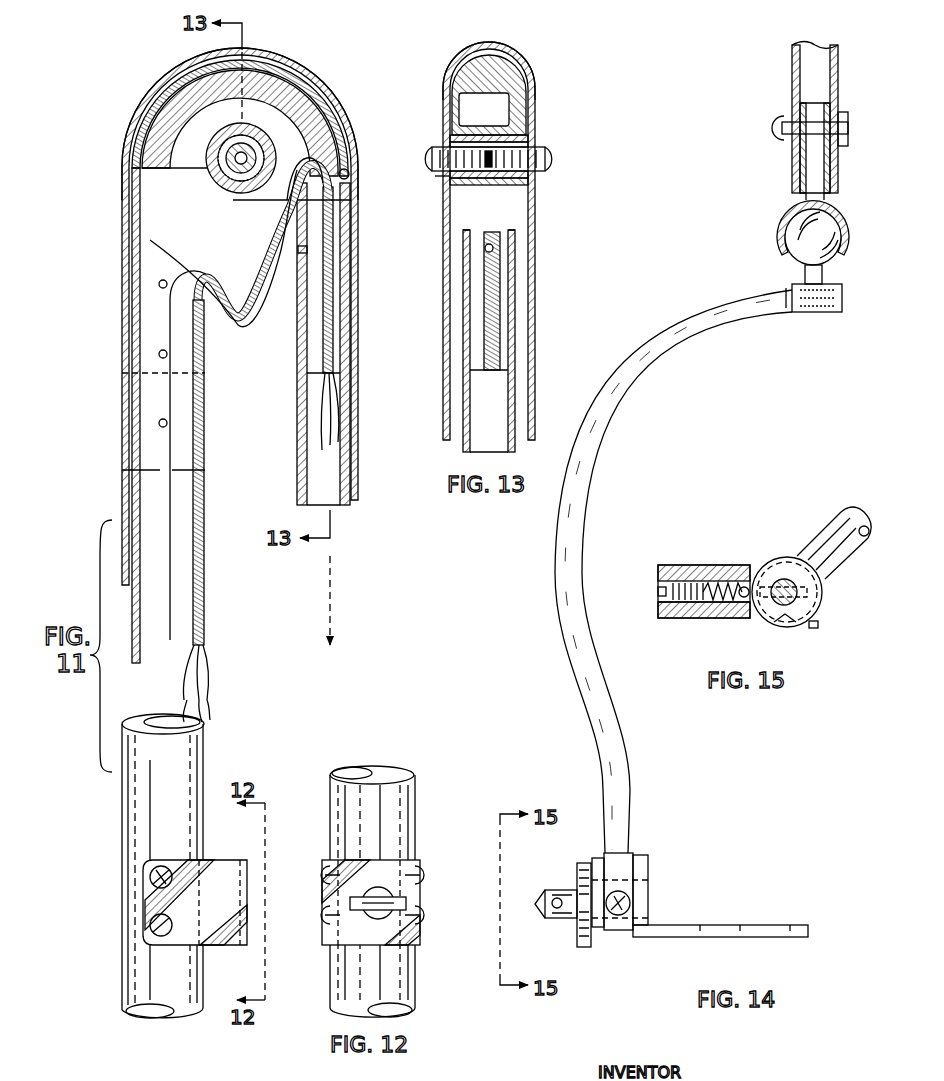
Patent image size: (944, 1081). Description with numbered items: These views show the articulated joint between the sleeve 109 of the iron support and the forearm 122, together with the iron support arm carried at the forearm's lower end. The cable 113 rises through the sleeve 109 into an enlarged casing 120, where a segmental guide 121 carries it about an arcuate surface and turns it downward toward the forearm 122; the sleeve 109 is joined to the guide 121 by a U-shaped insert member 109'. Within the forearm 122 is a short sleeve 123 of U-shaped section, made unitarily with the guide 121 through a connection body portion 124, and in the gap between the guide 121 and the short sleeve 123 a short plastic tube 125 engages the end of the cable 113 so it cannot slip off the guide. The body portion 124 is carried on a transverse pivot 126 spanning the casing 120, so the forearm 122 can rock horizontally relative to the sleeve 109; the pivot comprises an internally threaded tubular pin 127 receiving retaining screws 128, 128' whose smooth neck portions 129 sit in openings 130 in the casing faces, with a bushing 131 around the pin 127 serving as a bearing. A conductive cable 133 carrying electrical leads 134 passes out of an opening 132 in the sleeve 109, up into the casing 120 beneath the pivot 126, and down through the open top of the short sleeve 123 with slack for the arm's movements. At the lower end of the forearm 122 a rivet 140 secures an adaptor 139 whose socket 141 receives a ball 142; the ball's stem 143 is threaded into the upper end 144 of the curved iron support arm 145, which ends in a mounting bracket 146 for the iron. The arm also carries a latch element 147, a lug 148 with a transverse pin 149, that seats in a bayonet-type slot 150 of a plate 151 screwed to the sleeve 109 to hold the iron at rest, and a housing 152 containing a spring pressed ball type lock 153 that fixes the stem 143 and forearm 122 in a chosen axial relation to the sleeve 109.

In FIG. 11, the sleeve 109 is at (155, 616).
In FIG. 12, the sleeve 109 is at (401, 891).
In FIG. 11, the insert member 109' is at (220, 472).
In FIG. 11, the cable 113 is at (162, 90).
In FIG. 13, the cable 113 is at (490, 58).
In FIG. 11, the casing 120 is at (126, 240).
In FIG. 13, the casing 120 is at (531, 74).
In FIG. 11, the segmental guide 121 is at (273, 110).
In FIG. 11, the forearm 122 is at (350, 385).
In FIG. 13, the forearm 122 is at (515, 392).
In FIG. 14, the forearm 122 is at (794, 76).
In FIG. 11, the short sleeve 123 is at (334, 266).
In FIG. 13, the short sleeve 123 is at (500, 302).
In FIG. 11, the body portion 124 is at (300, 80).
In FIG. 13, the body portion 124 is at (520, 104).
In FIG. 11, the plastic tube 125 is at (350, 174).
In FIG. 13, the plastic tube 125 is at (434, 177).
In FIG. 13, the pivot 126 is at (540, 150).
In FIG. 11, the tubular pin 127 is at (233, 184).
In FIG. 13, the tubular pin 127 is at (530, 175).
In FIG. 13, the retaining screw 128 is at (520, 158).
In FIG. 13, the retaining screw 128' is at (461, 157).
In FIG. 13, the neck portion 129 is at (447, 181).
In FIG. 13, the opening 130 is at (442, 149).
In FIG. 13, the bushing 131 is at (528, 138).
In FIG. 11, the opening 132 is at (208, 300).
In FIG. 11, the conductive cable 133 is at (340, 422).
In FIG. 11, the electrical leads 134 is at (198, 690).
In FIG. 14, the adaptor 139 is at (800, 172).
In FIG. 14, the rivet 140 is at (784, 124).
In FIG. 14, the socket 141 is at (792, 216).
In FIG. 14, the ball 142 is at (800, 246).
In FIG. 14, the stem 143 is at (806, 274).
In FIG. 14, the upper end of support arm 144 is at (815, 315).
In FIG. 14, the iron support arm 145 is at (645, 372).
In FIG. 15, the iron support arm 145 is at (838, 530).
In FIG. 14, the mounting bracket 146 is at (694, 925).
In FIG. 15, the mounting bracket 146 is at (814, 628).
In FIG. 14, the latch element 147 is at (600, 880).
In FIG. 15, the latch element 147 is at (784, 583).
In FIG. 14, the lug 148 is at (545, 902).
In FIG. 14, the pin 149 is at (556, 909).
In FIG. 11, the bayonet-type slot 150 is at (247, 900).
In FIG. 12, the bayonet-type slot 150 is at (386, 890).
In FIG. 11, the plate 151 is at (235, 945).
In FIG. 12, the plate 151 is at (416, 906).
In FIG. 15, the housing 152 is at (742, 566).
In FIG. 15, the spring pressed ball type lock 153 is at (745, 616).